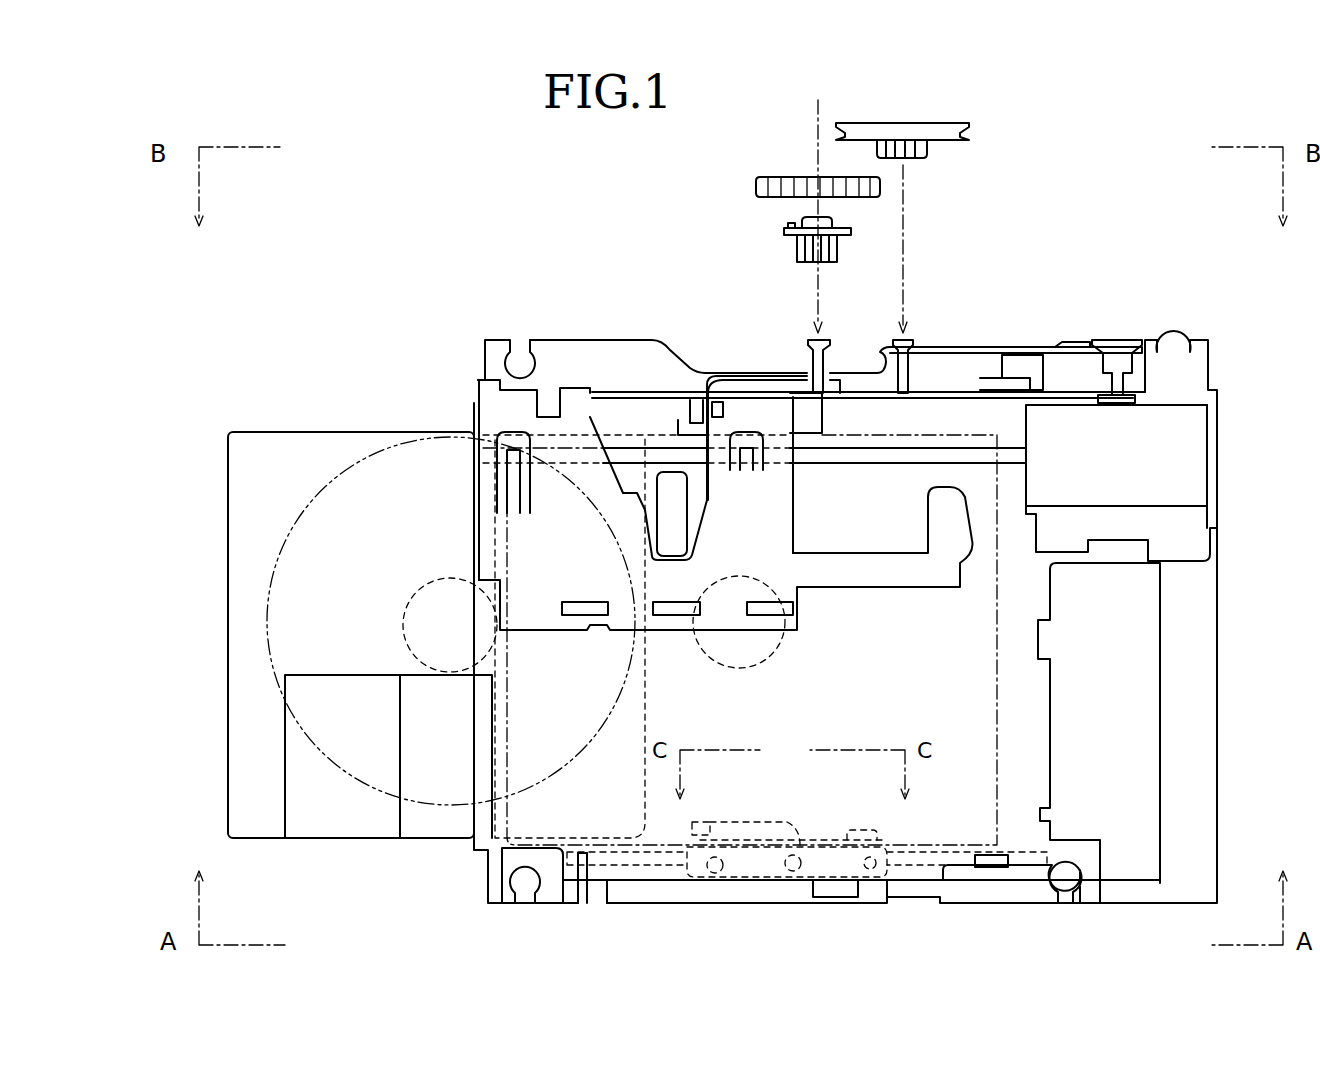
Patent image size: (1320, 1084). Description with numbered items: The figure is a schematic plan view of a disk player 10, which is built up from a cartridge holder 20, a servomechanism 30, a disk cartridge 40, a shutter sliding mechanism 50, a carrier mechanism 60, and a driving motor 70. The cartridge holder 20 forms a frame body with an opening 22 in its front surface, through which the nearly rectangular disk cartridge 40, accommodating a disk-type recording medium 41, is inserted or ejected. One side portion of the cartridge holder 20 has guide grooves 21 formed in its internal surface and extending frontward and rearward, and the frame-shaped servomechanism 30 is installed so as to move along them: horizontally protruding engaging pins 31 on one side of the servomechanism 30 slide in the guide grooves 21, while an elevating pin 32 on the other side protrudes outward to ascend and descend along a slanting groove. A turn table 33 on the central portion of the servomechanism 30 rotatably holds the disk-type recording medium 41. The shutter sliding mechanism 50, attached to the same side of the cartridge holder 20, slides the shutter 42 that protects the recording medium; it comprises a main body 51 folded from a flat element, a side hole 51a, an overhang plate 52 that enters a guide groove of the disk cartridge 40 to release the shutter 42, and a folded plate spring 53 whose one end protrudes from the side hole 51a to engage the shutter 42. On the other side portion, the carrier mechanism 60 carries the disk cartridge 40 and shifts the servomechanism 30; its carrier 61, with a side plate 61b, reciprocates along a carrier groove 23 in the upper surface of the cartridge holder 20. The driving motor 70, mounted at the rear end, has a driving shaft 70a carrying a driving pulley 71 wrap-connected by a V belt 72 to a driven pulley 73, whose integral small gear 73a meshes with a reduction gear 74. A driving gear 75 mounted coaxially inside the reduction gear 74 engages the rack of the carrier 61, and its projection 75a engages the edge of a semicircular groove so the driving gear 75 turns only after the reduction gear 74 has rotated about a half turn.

The disk player 10 is at (455, 230).
The cartridge holder 20 is at (1202, 670).
The guide grooves 21 is at (667, 862).
The opening 22 is at (470, 512).
The carrier groove 23 is at (660, 455).
The servomechanism 30 is at (997, 683).
The engaging pins 31 is at (585, 900).
The elevating pin 32 is at (723, 422).
The turn table 33 is at (730, 668).
The disk cartridge 40 is at (240, 800).
The disk-type recording medium 41 is at (265, 655).
The shutter 42 is at (435, 825).
The shutter sliding mechanism 50 is at (780, 808).
The shutter sliding mechanism main body 51 is at (830, 842).
The side hole 51a is at (540, 618).
The overhang plate 52 is at (860, 838).
The plate spring 53 is at (745, 835).
The carrier mechanism 60 is at (948, 372).
The carrier 61 is at (490, 396).
The side plate 61b is at (578, 385).
The driving motor 70 is at (1200, 445).
The driving shaft 70a is at (1123, 392).
The driving pulley 71 is at (1120, 362).
The V belt 72 is at (1078, 347).
The driven pulley 73 is at (945, 138).
The small gear 73a is at (925, 160).
The reduction gear 74 is at (757, 186).
The driving gear 75 is at (790, 233).
The projection 75a is at (790, 226).